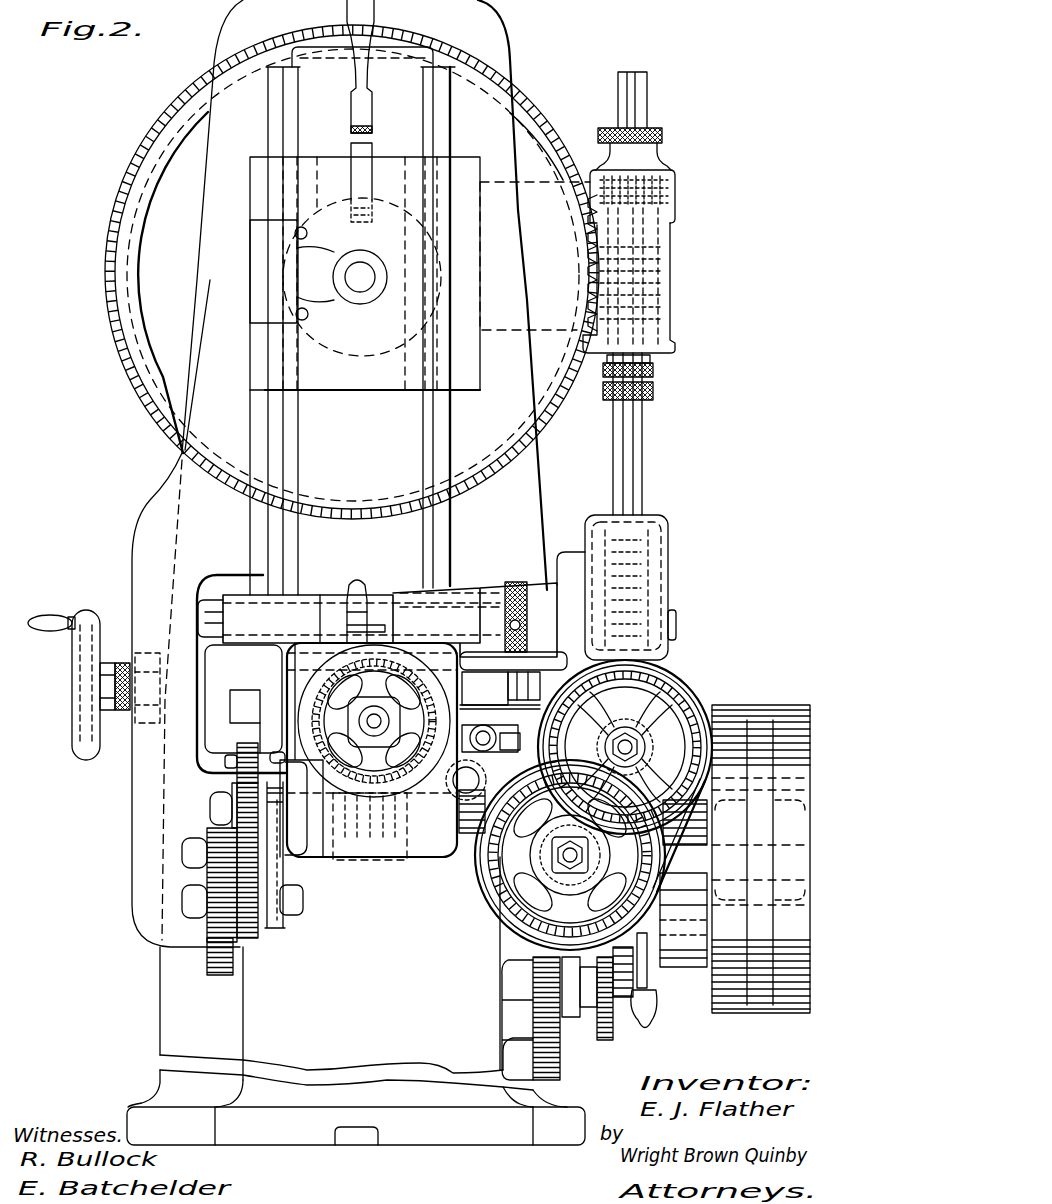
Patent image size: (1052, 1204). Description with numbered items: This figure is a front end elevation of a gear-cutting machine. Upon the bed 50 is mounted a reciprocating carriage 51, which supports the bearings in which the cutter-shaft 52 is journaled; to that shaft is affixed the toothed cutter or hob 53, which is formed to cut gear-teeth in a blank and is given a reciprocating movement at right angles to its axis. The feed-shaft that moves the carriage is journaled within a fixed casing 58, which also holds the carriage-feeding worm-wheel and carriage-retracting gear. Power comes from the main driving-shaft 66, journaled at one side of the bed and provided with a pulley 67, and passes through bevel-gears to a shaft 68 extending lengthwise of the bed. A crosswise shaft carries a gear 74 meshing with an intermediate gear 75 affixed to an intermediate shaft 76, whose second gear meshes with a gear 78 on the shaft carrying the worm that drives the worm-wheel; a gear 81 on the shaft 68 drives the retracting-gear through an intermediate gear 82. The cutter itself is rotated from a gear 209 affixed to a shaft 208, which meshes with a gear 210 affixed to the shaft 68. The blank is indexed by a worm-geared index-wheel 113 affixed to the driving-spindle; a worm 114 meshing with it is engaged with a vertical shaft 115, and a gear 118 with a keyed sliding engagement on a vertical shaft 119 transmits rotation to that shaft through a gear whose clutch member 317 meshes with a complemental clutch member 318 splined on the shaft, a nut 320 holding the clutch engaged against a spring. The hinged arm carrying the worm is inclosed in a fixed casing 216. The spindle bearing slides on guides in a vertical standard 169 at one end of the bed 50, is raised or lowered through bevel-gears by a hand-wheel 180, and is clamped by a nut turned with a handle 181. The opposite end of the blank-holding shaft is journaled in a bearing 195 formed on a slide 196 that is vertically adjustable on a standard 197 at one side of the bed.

The bed 50 is at (243, 985).
The vertical standard 169 is at (207, 340).
The worm-geared index-wheel 113 is at (548, 420).
The standard 197 is at (262, 425).
The slide 196 is at (266, 282).
The bearing 195 is at (370, 284).
The handle 181 is at (372, 118).
The vertical shaft 115 is at (650, 108).
The nut 320 is at (662, 136).
The complemental clutch member 318 is at (660, 166).
The clutch member 317 is at (690, 178).
The gear 118 is at (672, 188).
The worm 114 is at (662, 268).
The fixed casing 216 is at (672, 296).
The vertical shaft 119 is at (637, 428).
The cutter-shaft 52 is at (197, 610).
The toothed cutter or hob 53 is at (360, 588).
The reciprocating carriage 51 is at (241, 674).
The fixed casing 58 is at (420, 860).
The intermediate gear 82 is at (467, 835).
The hand-wheel 180 is at (122, 705).
The gear 78 is at (235, 767).
The gear 74 is at (207, 838).
The intermediate shaft 76 is at (185, 905).
The intermediate gear 75 is at (207, 960).
The gear 209 is at (660, 688).
The shaft 208 is at (640, 735).
The gear 210 is at (497, 880).
The shaft 68 is at (540, 878).
The gear 81 is at (505, 932).
The pulley 67 is at (760, 708).
The main driving-shaft 66 is at (796, 858).